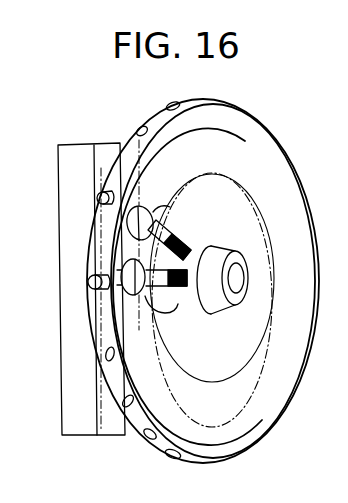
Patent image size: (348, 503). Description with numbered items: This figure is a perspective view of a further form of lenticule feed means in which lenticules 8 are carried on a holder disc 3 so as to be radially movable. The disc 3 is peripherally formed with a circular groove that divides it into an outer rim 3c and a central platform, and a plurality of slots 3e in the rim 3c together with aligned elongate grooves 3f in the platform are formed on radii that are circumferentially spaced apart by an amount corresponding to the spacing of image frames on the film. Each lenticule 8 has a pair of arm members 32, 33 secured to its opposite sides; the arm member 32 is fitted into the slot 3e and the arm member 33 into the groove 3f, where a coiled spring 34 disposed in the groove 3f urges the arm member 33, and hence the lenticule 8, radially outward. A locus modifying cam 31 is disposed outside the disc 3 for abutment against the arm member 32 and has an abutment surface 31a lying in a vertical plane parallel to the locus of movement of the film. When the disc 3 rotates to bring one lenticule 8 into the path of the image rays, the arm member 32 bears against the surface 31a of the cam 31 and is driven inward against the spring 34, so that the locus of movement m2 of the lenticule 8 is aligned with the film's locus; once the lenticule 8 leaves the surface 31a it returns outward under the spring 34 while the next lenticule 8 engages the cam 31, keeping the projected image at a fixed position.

The holder disc 3 is at (288, 142).
The slot 3e is at (143, 127).
The outer rim 3c is at (148, 438).
The elongate groove 3f is at (176, 304).
The lenticule 8 is at (152, 212).
The locus modifying cam 31 is at (77, 430).
The abutment surface 31a is at (96, 145).
The arm member 32 is at (100, 197).
The arm member 33 is at (166, 222).
The coiled spring 34 is at (200, 246).
The locus of movement of the lenticule m2 is at (200, 417).